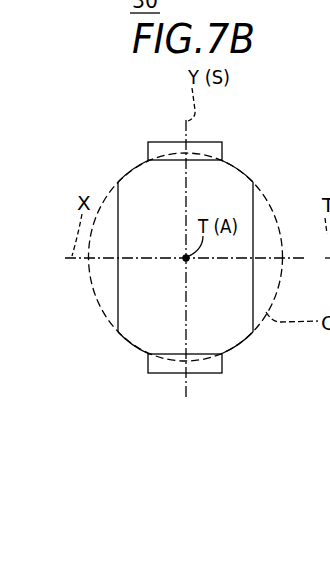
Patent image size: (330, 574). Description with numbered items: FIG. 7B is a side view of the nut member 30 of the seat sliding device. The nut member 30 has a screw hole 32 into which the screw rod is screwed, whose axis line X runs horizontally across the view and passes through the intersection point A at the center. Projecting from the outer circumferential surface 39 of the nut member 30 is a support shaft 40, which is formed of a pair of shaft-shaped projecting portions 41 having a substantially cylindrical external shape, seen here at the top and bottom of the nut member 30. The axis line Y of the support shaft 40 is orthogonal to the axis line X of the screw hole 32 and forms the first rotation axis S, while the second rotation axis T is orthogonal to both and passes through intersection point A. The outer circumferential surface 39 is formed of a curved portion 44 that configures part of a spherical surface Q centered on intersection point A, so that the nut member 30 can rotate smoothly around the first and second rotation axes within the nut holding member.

The nut member 30 is at (211, 264).
The screw hole 32 is at (256, 193).
The outer circumferential surface 39 is at (211, 242).
The curved portion 44 is at (232, 166).
The support shaft 40 is at (221, 250).
The shaft-shaped projecting portions 41 is at (209, 142).